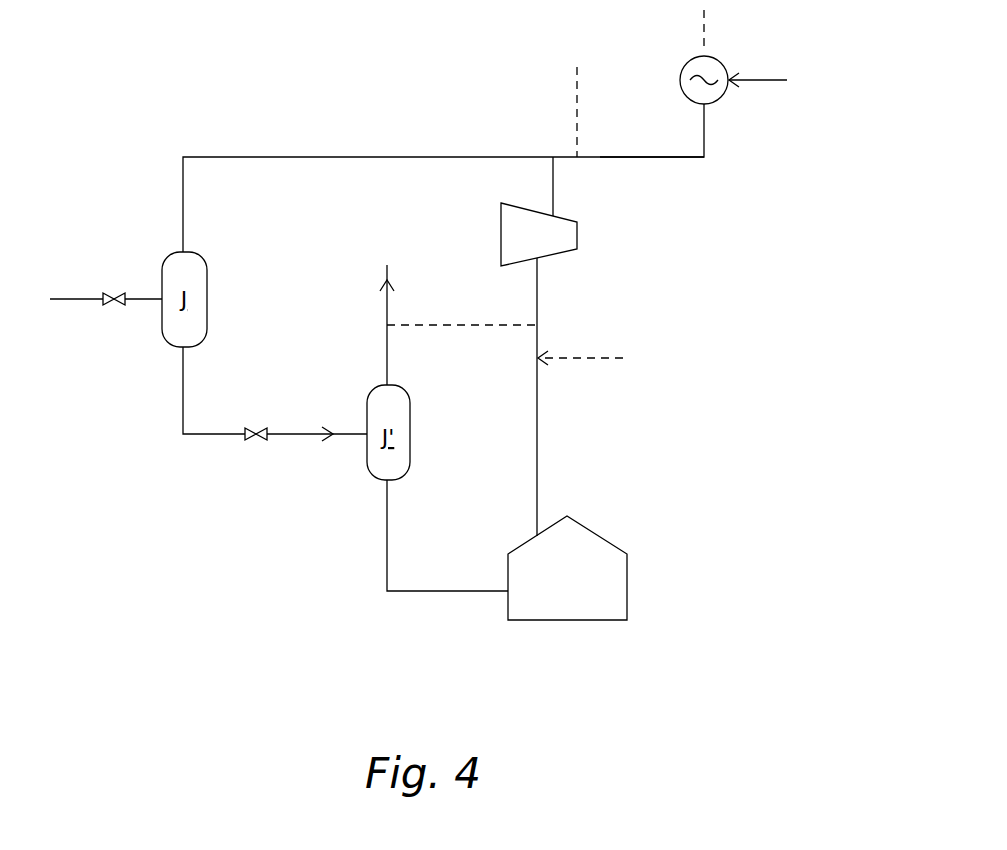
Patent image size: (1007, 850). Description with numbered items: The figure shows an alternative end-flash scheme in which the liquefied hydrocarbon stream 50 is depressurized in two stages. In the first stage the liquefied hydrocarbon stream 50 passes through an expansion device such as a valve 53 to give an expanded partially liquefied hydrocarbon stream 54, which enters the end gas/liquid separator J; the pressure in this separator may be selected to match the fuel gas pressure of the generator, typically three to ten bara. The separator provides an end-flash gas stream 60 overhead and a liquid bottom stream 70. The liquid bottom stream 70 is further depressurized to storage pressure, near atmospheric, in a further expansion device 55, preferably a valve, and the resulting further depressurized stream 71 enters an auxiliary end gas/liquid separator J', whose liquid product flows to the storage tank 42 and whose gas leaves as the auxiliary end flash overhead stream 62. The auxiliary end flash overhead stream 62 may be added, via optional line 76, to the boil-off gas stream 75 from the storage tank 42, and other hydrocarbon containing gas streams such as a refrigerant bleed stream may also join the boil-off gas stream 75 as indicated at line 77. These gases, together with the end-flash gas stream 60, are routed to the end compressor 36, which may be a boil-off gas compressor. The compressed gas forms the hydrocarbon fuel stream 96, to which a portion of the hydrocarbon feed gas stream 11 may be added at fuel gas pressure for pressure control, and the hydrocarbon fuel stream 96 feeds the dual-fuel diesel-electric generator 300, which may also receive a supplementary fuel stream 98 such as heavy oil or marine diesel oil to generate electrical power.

The hydrocarbon feed gas stream 11 is at (575, 106).
The end compressor 36 is at (539, 211).
The storage tank 42 is at (567, 568).
The liquefied hydrocarbon stream 50 is at (62, 297).
The valve 53 is at (120, 303).
The expanded partially liquefied hydrocarbon stream 54 is at (140, 297).
The further expansion device 55 is at (258, 440).
The end-flash gas stream 60 is at (243, 157).
The auxiliary end flash overhead stream 62 is at (386, 347).
The liquid bottom stream 70 is at (183, 405).
The further depressurized stream 71 is at (300, 436).
The boil-off gas stream 75 is at (537, 426).
The optional line 76 is at (460, 326).
The line 77 is at (600, 357).
The hydrocarbon fuel stream 96 is at (665, 157).
The supplementary fuel stream 98 is at (767, 80).
The dual-fuel diesel-electric generator 300 is at (721, 57).